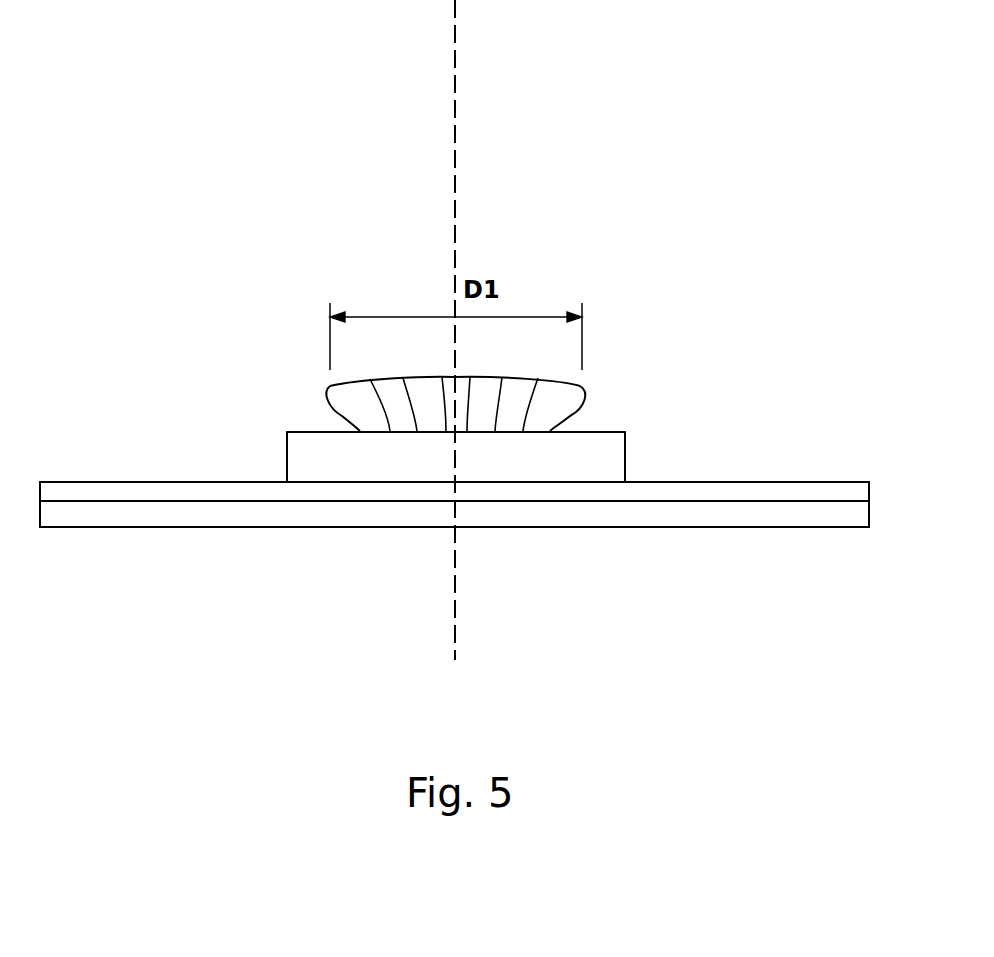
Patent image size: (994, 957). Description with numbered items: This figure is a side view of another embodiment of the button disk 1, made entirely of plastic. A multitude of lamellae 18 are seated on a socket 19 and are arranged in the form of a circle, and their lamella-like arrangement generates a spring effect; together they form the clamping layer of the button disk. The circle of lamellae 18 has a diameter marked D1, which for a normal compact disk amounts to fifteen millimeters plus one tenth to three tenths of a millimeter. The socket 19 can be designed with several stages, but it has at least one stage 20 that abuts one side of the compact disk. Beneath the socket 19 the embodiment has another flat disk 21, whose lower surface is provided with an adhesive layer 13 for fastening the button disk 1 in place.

The arrangement 1 is at (413, 218).
The adhesive layer 13 is at (668, 516).
The lamellae 18 is at (567, 396).
The socket 19 is at (600, 442).
The stage 20 is at (302, 458).
The flat disk 21 is at (782, 491).